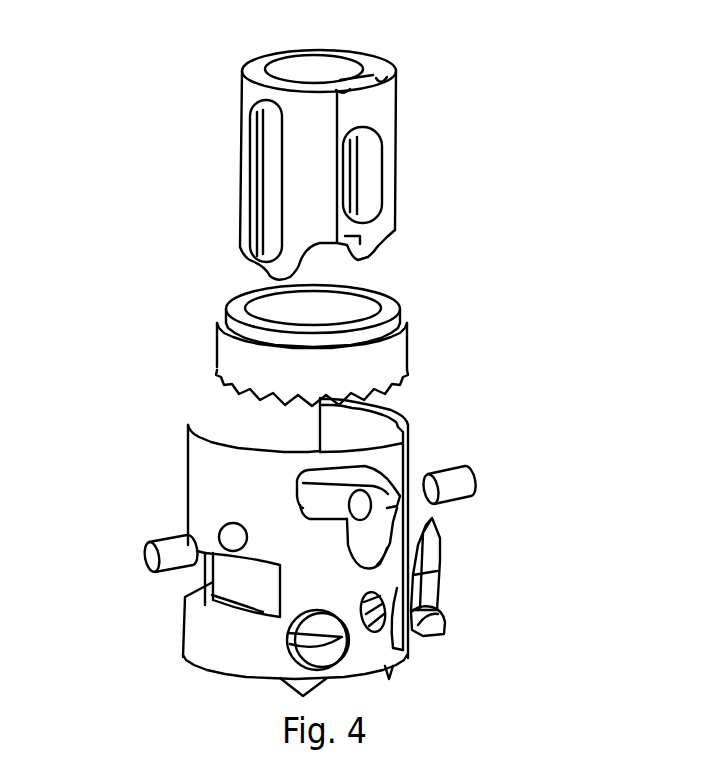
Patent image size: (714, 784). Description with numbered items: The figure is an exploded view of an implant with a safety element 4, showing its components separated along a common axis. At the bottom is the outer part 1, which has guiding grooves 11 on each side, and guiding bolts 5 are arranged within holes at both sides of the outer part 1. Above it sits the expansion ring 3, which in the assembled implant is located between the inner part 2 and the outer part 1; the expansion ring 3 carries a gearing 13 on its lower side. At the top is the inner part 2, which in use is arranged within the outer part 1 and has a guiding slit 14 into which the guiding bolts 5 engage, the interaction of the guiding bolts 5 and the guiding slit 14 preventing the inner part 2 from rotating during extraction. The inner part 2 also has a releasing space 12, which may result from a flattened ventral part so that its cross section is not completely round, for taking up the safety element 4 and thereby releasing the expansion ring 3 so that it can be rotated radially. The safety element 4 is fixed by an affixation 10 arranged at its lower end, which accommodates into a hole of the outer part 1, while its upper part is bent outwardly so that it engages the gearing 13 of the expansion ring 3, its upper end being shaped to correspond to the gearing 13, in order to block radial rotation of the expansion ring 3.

The outer part 1 is at (205, 470).
The inner part 2 is at (383, 63).
The expansion ring 3 is at (395, 348).
The safety element 4 is at (428, 548).
The guiding bolts 5 is at (152, 555).
The affixation 10 is at (430, 615).
The guiding grooves 11 is at (243, 582).
The releasing space 12 is at (368, 165).
The gearing 13 is at (400, 383).
The guiding slit 14 is at (262, 182).